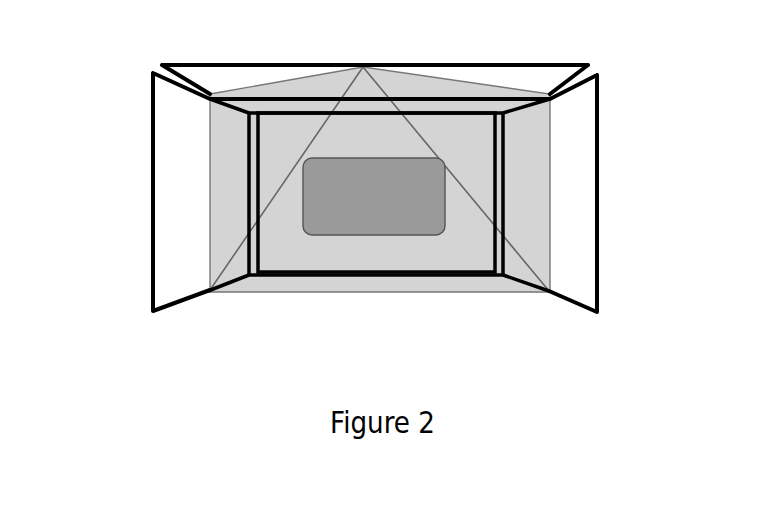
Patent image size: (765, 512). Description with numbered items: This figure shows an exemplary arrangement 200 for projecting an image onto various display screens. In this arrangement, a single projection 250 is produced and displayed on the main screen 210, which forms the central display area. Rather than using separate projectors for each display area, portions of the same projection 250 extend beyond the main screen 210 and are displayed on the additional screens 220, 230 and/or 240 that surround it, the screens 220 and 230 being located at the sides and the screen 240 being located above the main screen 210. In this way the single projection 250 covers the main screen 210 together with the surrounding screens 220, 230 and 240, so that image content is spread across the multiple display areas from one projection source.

The display system 200 is at (289, 145).
The main screen 210 is at (376, 192).
The screen 220 is at (185, 192).
The screen 230 is at (568, 193).
The screen 240 is at (375, 81).
The projection 250 is at (527, 186).